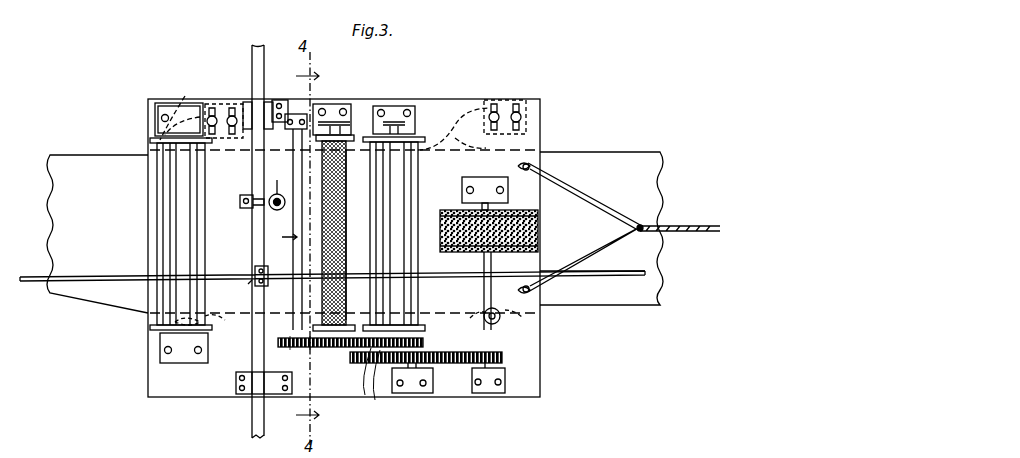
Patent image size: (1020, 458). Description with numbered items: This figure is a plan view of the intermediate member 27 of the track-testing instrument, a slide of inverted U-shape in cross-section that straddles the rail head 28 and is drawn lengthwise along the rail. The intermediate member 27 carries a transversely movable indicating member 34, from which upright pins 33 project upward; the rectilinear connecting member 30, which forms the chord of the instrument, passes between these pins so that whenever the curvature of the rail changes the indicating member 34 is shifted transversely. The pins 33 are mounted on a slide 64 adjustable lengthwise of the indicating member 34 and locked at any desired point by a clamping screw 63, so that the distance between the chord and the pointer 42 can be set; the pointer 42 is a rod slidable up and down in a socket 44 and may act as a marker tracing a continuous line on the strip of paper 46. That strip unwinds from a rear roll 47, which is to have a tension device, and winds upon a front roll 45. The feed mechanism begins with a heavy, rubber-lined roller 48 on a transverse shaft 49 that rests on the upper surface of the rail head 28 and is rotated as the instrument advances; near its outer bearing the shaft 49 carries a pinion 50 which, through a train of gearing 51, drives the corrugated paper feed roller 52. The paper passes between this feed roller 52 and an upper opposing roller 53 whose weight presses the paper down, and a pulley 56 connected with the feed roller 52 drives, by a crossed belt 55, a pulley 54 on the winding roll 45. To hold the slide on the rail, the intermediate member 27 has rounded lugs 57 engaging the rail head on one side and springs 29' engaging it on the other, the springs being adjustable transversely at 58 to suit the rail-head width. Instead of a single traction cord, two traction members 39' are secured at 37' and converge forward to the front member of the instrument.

The intermediate member 27 is at (186, 388).
The rail head 28 is at (601, 228).
The springs 29' is at (330, 117).
The connecting member 30 is at (600, 276).
The upright pins 33 is at (255, 281).
The indicating member 34 is at (258, 424).
The securing points of traction members 37' is at (547, 228).
The traction members 39' is at (624, 227).
The pointer 42 is at (282, 228).
The socket 44 is at (277, 191).
The front roll 45 is at (416, 198).
The strip of paper 46 is at (216, 236).
The rear roll 47 is at (158, 198).
The roller 48 is at (540, 232).
The transverse shaft 49 is at (486, 289).
The pinion 50 is at (503, 356).
The train of gearing 51 is at (350, 377).
The paper feed roller 52 is at (348, 207).
The upper opposing roller 53 is at (348, 262).
The pulley 54 is at (404, 122).
The crossed belt 55 is at (354, 122).
The pulley 56 is at (322, 118).
The rounded lugs 57 is at (222, 328).
The spring adjustment 58 is at (232, 106).
The clamping screw 63 is at (242, 198).
The slide 64 is at (270, 268).